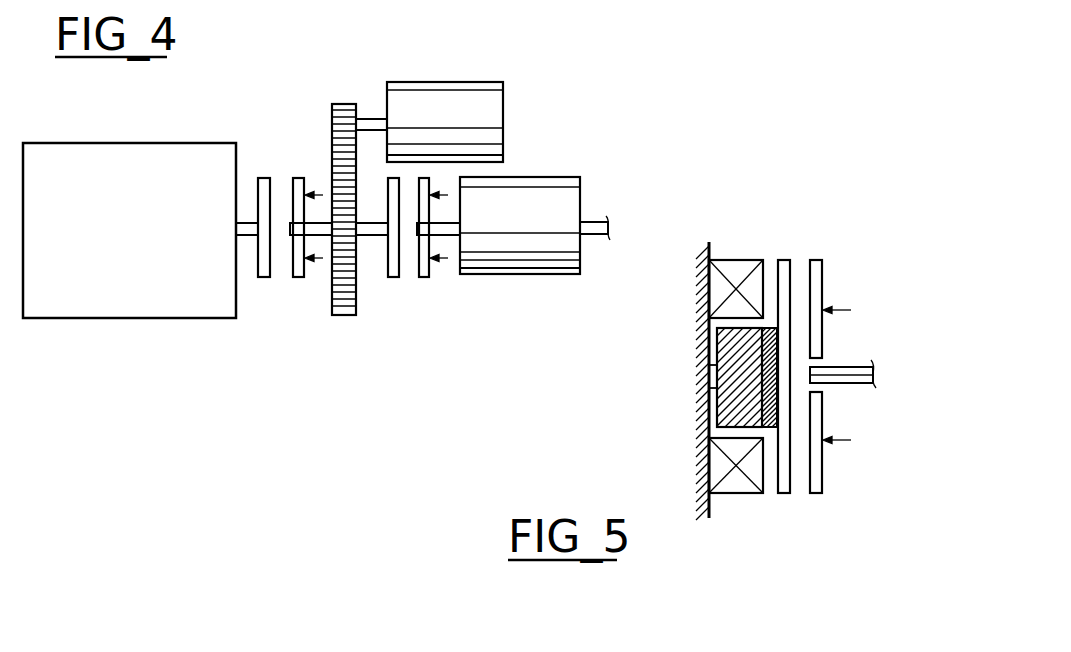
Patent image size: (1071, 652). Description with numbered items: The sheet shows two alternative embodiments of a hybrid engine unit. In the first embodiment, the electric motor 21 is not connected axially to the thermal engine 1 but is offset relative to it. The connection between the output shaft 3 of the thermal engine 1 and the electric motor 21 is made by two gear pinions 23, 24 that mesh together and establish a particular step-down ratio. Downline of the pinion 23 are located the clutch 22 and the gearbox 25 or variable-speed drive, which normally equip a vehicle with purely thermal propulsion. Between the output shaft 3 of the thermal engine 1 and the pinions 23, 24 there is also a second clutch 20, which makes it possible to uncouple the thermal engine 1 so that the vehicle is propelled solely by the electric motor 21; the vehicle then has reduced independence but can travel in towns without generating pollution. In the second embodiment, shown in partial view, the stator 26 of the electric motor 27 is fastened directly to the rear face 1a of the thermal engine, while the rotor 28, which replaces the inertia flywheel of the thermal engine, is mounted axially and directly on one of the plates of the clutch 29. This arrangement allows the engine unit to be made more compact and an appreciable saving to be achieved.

In FIG. 4, the thermal engine 1 is at (156, 162).
In FIG. 5, the rear face of the thermal engine 1a is at (697, 330).
In FIG. 4, the output shaft 3 is at (247, 238).
In FIG. 4, the second clutch 20 is at (280, 290).
In FIG. 4, the electric motor 21 is at (443, 108).
In FIG. 4, the clutch 22 is at (406, 293).
In FIG. 4, the gear pinion 23 is at (343, 317).
In FIG. 4, the gear pinion 24 is at (337, 130).
In FIG. 4, the gearbox 25 is at (523, 245).
In FIG. 5, the stator 26 is at (737, 271).
In FIG. 5, the electric motor 27 is at (750, 512).
In FIG. 5, the rotor 28 is at (730, 412).
In FIG. 5, the clutch 29 is at (838, 262).